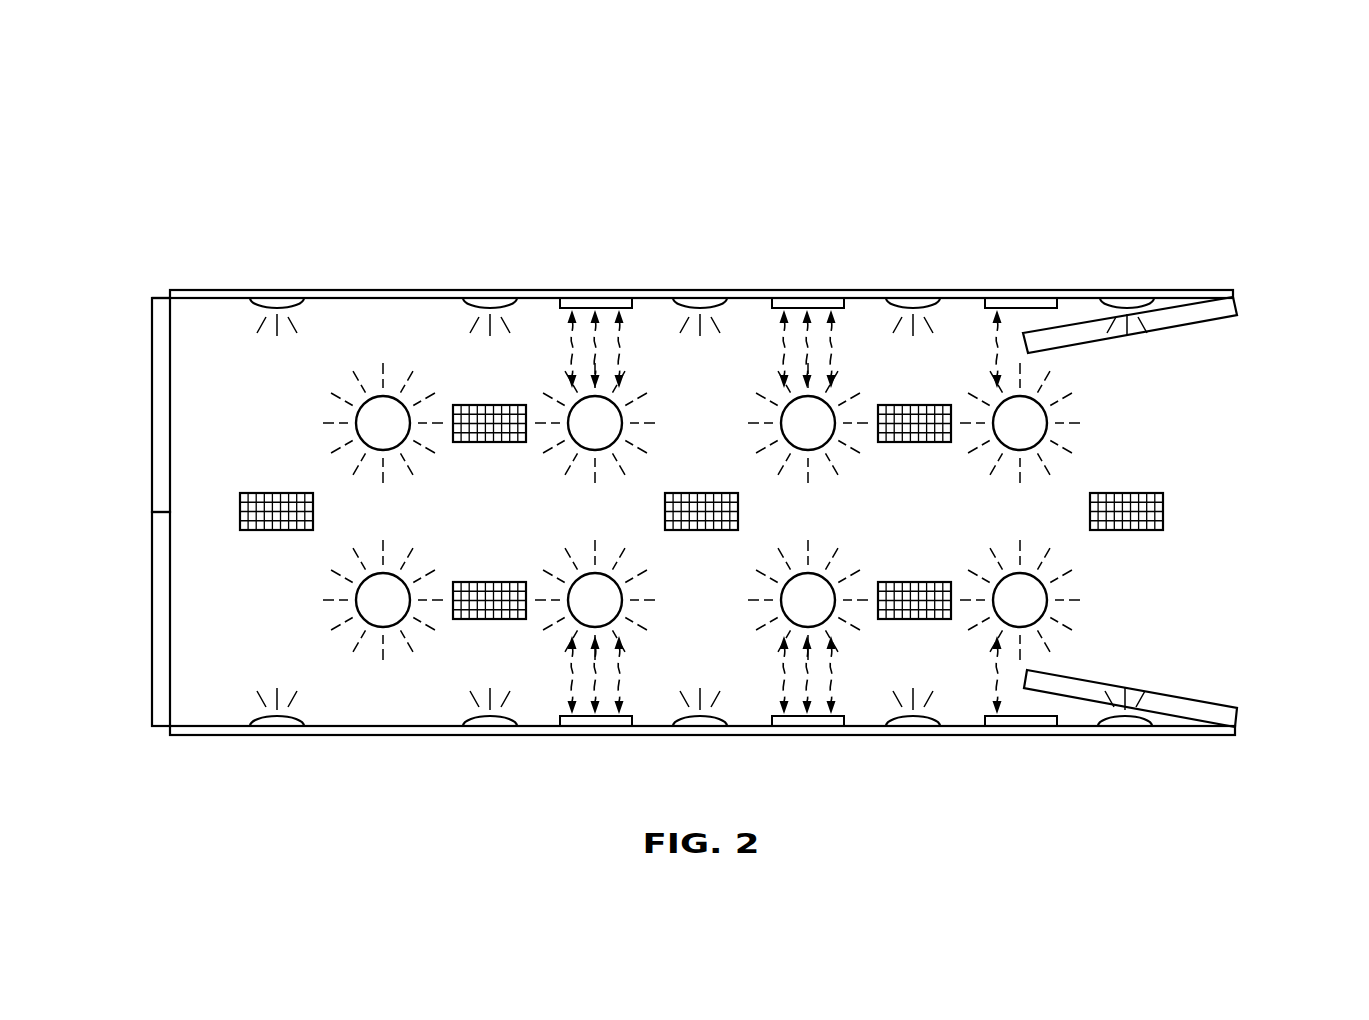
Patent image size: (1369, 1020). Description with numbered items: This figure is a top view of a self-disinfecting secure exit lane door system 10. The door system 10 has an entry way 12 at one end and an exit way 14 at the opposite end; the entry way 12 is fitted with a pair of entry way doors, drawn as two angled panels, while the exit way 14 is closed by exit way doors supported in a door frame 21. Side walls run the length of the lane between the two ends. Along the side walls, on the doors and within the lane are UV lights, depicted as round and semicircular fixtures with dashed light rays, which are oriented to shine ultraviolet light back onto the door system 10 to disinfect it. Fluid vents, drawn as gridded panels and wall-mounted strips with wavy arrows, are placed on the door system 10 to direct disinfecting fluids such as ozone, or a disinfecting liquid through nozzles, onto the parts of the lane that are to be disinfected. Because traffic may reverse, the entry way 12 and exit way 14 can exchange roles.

The door system 10 is at (441, 156).
The entry way 12 is at (1292, 429).
The exit way 14 is at (110, 393).
The door frame 21 is at (162, 296).